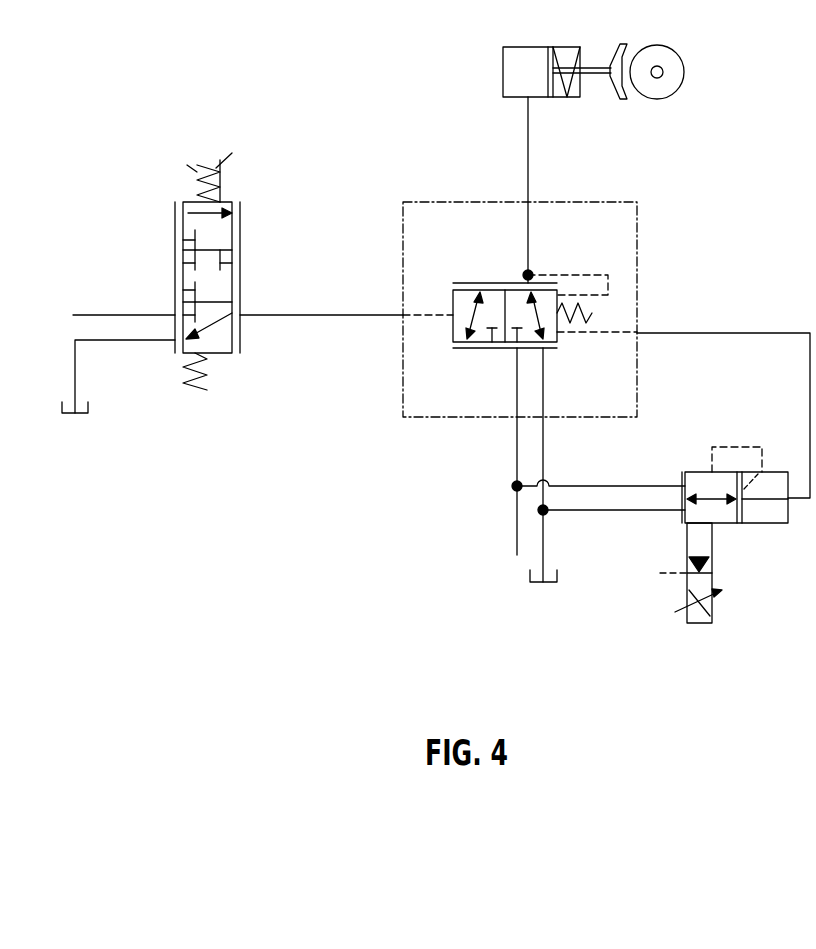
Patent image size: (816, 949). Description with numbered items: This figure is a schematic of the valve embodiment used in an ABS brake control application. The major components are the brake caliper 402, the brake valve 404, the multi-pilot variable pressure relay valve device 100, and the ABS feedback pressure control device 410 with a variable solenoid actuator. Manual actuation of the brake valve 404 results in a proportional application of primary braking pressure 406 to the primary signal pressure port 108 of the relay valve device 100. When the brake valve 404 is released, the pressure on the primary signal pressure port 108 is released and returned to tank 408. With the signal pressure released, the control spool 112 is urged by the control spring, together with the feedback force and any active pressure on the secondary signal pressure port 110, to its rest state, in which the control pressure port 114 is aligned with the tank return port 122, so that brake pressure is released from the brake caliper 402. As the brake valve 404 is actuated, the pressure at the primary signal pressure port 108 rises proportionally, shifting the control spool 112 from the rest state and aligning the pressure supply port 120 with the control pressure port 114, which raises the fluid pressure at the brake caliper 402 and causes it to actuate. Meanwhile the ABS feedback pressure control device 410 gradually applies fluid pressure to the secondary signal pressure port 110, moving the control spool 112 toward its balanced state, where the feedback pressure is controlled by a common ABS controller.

The multi-pilot variable pressure relay valve device 100 is at (415, 185).
The primary signal pressure port 108 is at (403, 315).
The secondary signal pressure port 110 is at (640, 332).
The control spool 112 is at (465, 290).
The control pressure port 114 is at (528, 202).
The pressure supply port 120 is at (517, 420).
The tank return port 122 is at (545, 420).
The brake caliper 402 is at (520, 47).
The brake valve 404 is at (180, 222).
The primary braking pressure 406 is at (175, 312).
The tank 408 is at (175, 347).
The ABS feedback pressure control device 410 is at (727, 525).